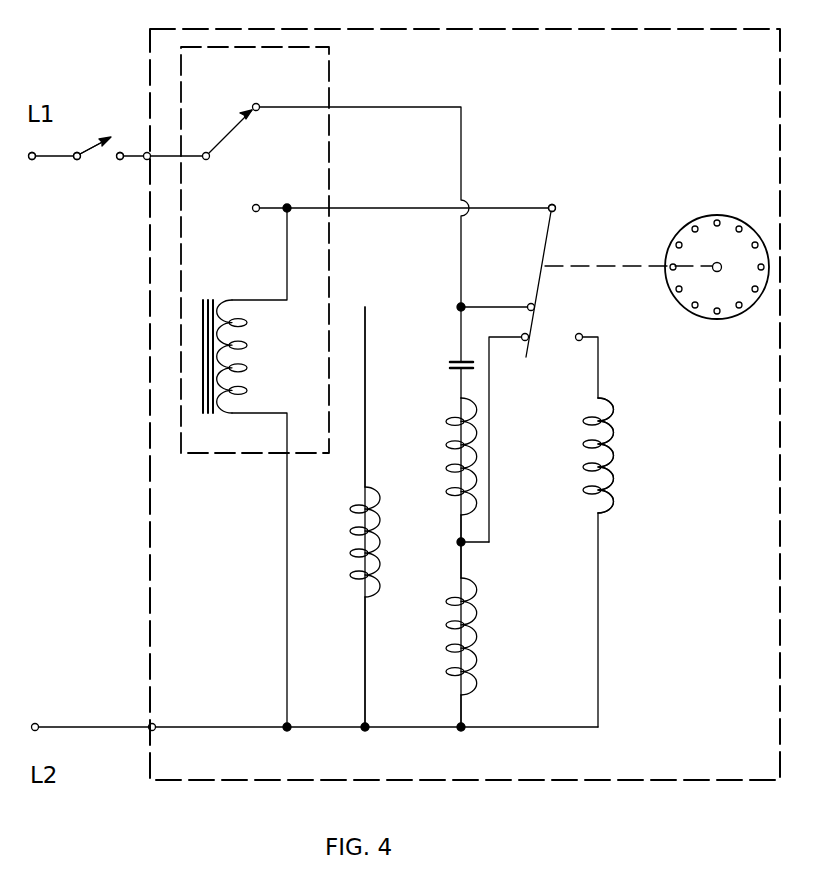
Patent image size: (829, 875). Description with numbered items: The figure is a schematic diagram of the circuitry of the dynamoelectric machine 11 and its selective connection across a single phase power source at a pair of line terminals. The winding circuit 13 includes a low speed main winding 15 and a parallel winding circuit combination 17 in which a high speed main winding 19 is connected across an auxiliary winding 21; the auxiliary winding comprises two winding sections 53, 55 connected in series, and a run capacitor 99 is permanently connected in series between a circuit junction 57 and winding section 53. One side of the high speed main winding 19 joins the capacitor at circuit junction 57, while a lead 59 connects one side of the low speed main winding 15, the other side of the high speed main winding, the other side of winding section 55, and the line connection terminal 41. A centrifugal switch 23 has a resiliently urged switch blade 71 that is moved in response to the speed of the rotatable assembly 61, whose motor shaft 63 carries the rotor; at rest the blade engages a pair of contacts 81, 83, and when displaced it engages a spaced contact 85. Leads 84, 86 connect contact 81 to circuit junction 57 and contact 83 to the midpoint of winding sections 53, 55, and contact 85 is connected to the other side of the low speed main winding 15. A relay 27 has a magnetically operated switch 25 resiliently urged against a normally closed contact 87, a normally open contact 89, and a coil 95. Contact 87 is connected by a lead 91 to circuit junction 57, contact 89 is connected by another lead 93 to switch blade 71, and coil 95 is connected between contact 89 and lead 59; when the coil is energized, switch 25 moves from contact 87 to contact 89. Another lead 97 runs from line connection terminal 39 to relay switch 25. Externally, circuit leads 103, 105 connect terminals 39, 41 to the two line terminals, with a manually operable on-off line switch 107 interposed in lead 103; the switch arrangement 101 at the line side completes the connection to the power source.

The dynamoelectric machine 11 is at (147, 510).
The winding circuit 13 is at (621, 458).
The low speed main winding 15 is at (585, 485).
The parallel winding circuit combination 17 is at (360, 591).
The high speed main winding 19 is at (357, 540).
The auxiliary winding 21 is at (487, 559).
The centrifugal switch 23 is at (558, 197).
The magnetically operated switch 25 is at (216, 144).
The relay 27 is at (240, 458).
The line connection terminal 39 is at (146, 150).
The line connection terminal 41 is at (149, 731).
The winding section 53 is at (452, 458).
The winding section 55 is at (455, 637).
The circuit junction 57 is at (459, 303).
The lead 59 is at (215, 724).
The rotatable assembly 61 is at (712, 272).
The motor shaft 63 is at (742, 220).
The switch blade 71 is at (552, 238).
The contact 81 is at (528, 303).
The contact 83 is at (522, 341).
The lead 84 is at (485, 305).
The contact 85 is at (577, 333).
The lead 86 is at (490, 525).
The normally closed contact 87 is at (259, 103).
The normally open contact 89 is at (258, 204).
The lead 91 is at (405, 106).
The lead 93 is at (375, 207).
The coil 95 is at (242, 355).
The lead 97 is at (168, 158).
The run capacitor 99 is at (447, 362).
The switch 101 is at (105, 102).
The circuit lead 103 is at (52, 160).
The circuit lead 105 is at (107, 724).
The line switch 107 is at (92, 136).